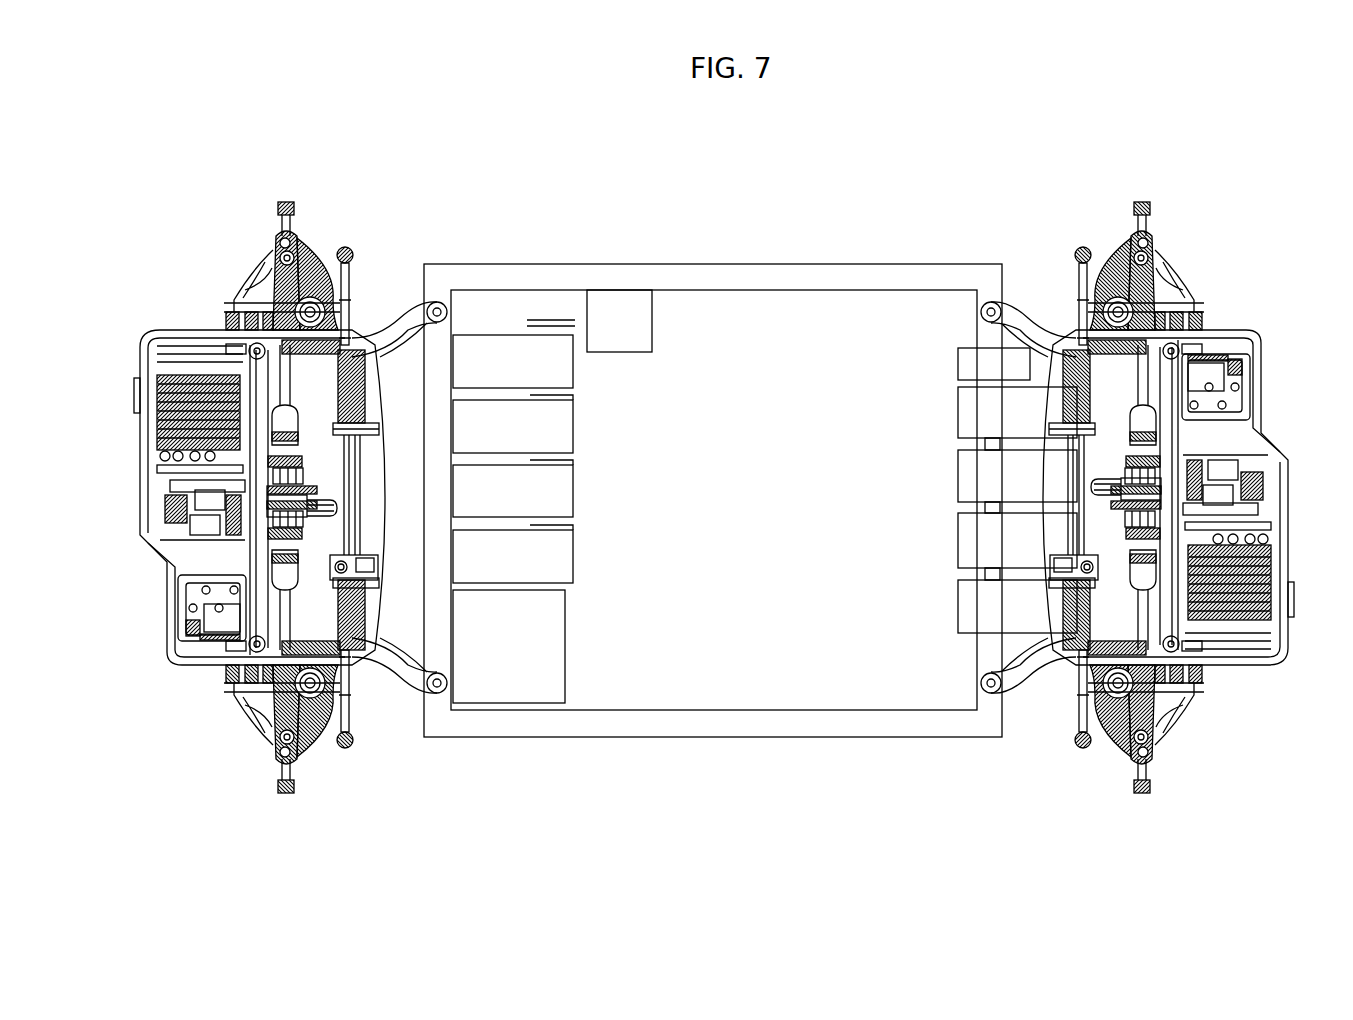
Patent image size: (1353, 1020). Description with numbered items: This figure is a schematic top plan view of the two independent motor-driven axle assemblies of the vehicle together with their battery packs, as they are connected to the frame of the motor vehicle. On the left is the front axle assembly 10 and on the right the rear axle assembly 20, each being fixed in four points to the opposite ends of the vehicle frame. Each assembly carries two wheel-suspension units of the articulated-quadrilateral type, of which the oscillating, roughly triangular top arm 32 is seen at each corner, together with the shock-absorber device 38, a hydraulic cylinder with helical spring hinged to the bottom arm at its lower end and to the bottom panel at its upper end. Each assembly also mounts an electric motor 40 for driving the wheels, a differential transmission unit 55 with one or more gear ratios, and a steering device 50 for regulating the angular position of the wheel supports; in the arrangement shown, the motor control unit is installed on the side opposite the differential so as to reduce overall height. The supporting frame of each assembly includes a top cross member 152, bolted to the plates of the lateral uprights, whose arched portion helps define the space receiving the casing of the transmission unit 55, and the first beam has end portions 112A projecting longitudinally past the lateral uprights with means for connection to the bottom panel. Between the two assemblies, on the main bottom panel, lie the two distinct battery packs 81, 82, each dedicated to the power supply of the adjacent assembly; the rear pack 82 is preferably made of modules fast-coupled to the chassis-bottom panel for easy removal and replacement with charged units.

The front axle assembly 10 is at (233, 227).
The rear axle assembly 20 is at (1194, 228).
The top arm 32 is at (271, 299).
The shock-absorber device 38 is at (326, 298).
The electric motor 40 is at (142, 430).
The steering device 50 is at (380, 505).
The differential transmission unit 55 is at (310, 440).
The battery pack 81 is at (591, 494).
The battery pack 82 is at (947, 486).
The end portions of the first beam 112A is at (415, 332).
The top cross member 152 is at (140, 545).